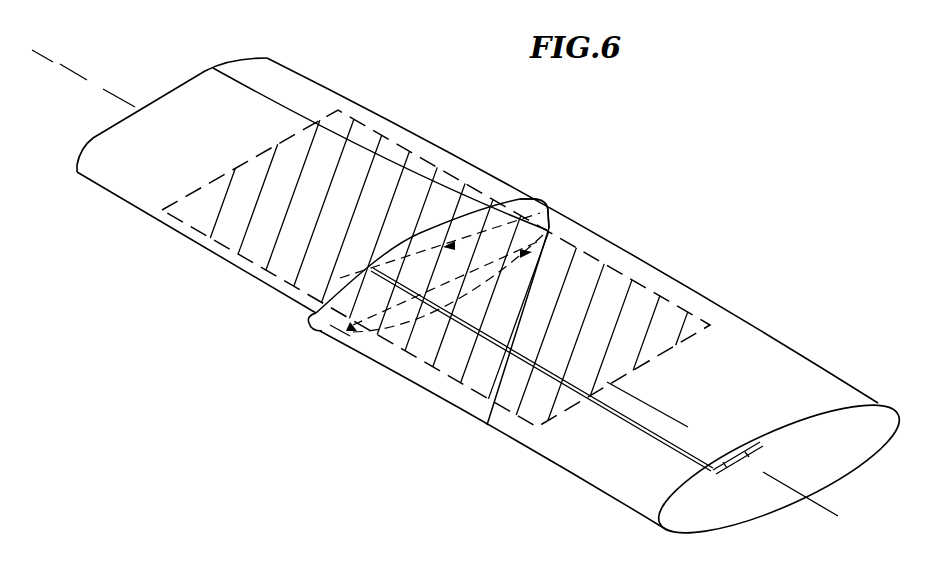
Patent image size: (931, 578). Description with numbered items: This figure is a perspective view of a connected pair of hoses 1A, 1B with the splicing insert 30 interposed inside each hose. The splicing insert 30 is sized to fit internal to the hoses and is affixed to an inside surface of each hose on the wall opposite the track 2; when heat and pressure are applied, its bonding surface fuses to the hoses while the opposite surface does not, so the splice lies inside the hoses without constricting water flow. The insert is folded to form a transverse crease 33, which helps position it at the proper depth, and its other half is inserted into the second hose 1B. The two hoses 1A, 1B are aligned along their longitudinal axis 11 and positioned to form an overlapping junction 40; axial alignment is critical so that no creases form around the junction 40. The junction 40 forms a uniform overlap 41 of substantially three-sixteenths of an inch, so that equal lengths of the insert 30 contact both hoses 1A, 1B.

The hose 1A is at (225, 269).
The hose 1B is at (708, 264).
The track 2 is at (386, 165).
The longitudinal axis 11 is at (442, 279).
The splicing insert 30 is at (578, 250).
The transverse crease 33 is at (346, 332).
The junction 40 is at (308, 317).
The overlap 41 is at (541, 197).